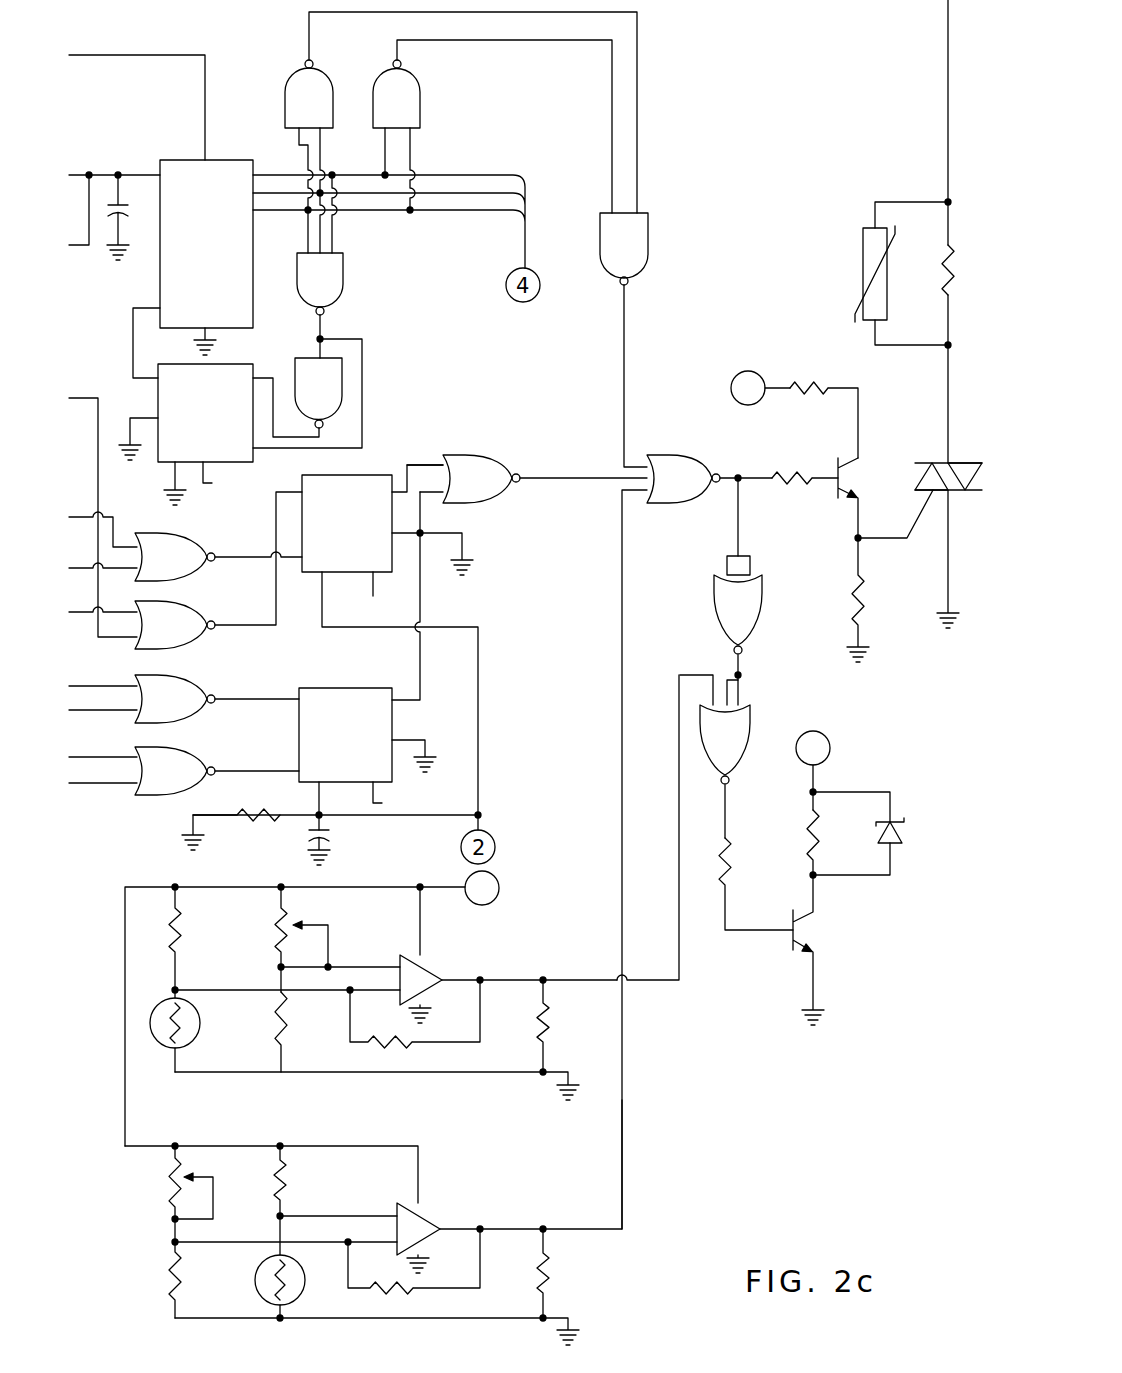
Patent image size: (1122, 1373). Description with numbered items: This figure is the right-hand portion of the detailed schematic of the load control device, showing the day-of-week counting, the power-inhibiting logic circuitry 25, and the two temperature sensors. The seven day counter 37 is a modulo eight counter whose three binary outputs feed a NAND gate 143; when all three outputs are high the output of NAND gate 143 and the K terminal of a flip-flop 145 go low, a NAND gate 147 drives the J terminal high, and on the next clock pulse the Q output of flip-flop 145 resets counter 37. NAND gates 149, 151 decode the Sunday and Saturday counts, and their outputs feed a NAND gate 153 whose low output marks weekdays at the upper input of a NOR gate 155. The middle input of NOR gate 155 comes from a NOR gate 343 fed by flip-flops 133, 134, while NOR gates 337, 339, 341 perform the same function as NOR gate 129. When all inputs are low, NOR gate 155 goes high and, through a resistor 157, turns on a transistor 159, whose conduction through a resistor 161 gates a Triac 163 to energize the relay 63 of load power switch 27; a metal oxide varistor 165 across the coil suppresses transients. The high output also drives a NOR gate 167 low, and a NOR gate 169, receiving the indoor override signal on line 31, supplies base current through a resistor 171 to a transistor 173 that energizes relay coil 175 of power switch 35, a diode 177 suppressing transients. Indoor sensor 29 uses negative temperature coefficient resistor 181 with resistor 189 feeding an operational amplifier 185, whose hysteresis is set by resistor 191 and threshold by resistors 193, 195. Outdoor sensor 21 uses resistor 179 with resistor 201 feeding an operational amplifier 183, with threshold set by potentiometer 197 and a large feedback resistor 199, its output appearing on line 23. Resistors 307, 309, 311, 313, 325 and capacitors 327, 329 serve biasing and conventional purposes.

The sensor 21 is at (346, 1244).
The line 23 is at (622, 1187).
The logic circuitry 25 is at (856, 477).
The load power switch 27 is at (885, 231).
The sensor 29 is at (371, 1008).
The line 31 is at (680, 965).
The power switch 35 is at (834, 878).
The 7 day counter 37 is at (217, 247).
The relay 63 is at (944, 270).
The NOR gate 129 is at (196, 612).
The flip-flop 133 is at (365, 475).
The flip-flop 134 is at (348, 688).
The NAND gate 143 is at (343, 272).
The flip-flop 145 is at (158, 401).
The NAND gate 147 is at (295, 366).
The NAND gate 149 is at (295, 70).
The NAND gate 151 is at (390, 70).
The NAND gate 153 is at (648, 245).
The NOR gate 155 is at (700, 457).
The resistor 157 is at (795, 472).
The transistor 159 is at (846, 456).
The resistor 161 is at (866, 600).
The Triac 163 is at (945, 462).
The metal oxide varistor 165 is at (863, 256).
The NOR gate 167 is at (760, 600).
The NOR gate 169 is at (750, 736).
The resistor 171 is at (752, 871).
The transistor 173 is at (805, 925).
The relay coil 175 is at (808, 826).
The diode 177 is at (925, 818).
The negative temperature coefficient resistor 179 is at (255, 1283).
The negative temperature coefficient resistor 181 is at (201, 1043).
The operational amplifier 183 is at (425, 1218).
The operational amplifier 185 is at (436, 966).
The resistor 189 is at (184, 935).
The resistor 191 is at (390, 1050).
The resistor 193 is at (278, 925).
The resistor 195 is at (275, 1025).
The potentiometer 197 is at (172, 1192).
The feed back resistor 199 is at (385, 1293).
The resistor 201 is at (288, 1186).
The resistor 307 is at (259, 809).
The resistor 309 is at (548, 1025).
The resistor 311 is at (549, 1275).
The resistor 313 is at (806, 382).
The resistor 325 is at (172, 1276).
The capacitor 327 is at (139, 214).
The capacitor 329 is at (332, 834).
The NOR gate 337 is at (197, 552).
The NOR gate 339 is at (196, 686).
The NOR gate 341 is at (196, 760).
The NOR gate 343 is at (476, 455).